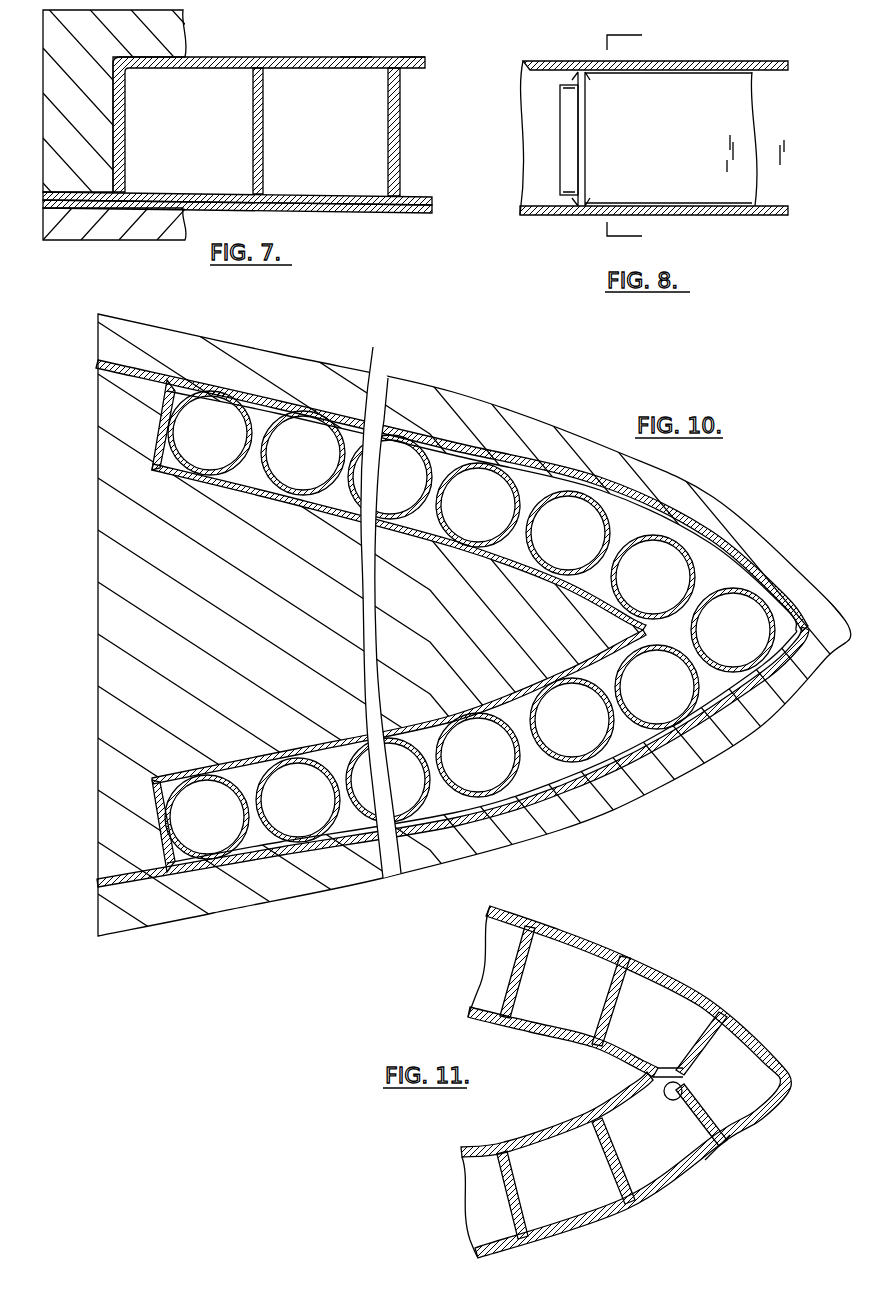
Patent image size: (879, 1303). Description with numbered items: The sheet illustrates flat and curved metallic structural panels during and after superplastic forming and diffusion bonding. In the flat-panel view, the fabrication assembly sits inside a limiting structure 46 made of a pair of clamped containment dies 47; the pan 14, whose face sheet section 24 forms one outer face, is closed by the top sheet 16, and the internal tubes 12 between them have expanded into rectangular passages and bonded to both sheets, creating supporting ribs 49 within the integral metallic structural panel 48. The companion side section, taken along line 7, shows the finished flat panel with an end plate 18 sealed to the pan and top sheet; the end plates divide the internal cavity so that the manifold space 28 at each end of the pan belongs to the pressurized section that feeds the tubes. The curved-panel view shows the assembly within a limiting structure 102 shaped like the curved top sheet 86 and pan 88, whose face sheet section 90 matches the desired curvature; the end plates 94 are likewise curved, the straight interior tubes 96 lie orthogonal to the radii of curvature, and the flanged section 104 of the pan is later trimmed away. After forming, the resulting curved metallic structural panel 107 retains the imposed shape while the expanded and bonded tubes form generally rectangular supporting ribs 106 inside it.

In FIG. 7, the internal tubes 12 is at (155, 192).
In FIG. 8, the internal tubes 12 is at (683, 72).
In FIG. 7, the pan 14 is at (283, 57).
In FIG. 7, the top sheet 16 is at (372, 214).
In FIG. 8, the top sheet 16 is at (770, 216).
In FIG. 8, the end plates 18 is at (568, 216).
In FIG. 7, the face sheet section 24 is at (425, 58).
In FIG. 8, the face sheet section 24 is at (733, 61).
In FIG. 8, the manifold space 28 is at (535, 130).
In FIG. 7, the limiting structure 46 is at (37, 192).
In FIG. 7, the containment dies 47 is at (183, 30).
In FIG. 7, the integral metallic structural panel 48 is at (347, 45).
In FIG. 7, the supporting ribs 49 is at (388, 120).
In FIG. 8, the section line 7— 7 is at (642, 31).
In FIG. 11, the top sheet 86 is at (717, 995).
In FIG. 10, the pan 88 is at (140, 470).
In FIG. 11, the pan 88 is at (600, 1057).
In FIG. 10, the face sheet section 90 is at (493, 557).
In FIG. 11, the face sheet section 90 is at (553, 1040).
In FIG. 10, the end plates 94 is at (532, 483).
In FIG. 10, the interior tubes 96 is at (573, 573).
In FIG. 11, the interior tubes 96 is at (683, 1088).
In FIG. 10, the limiting structure 102 is at (368, 374).
In FIG. 10, the flanged section 104 is at (138, 365).
In FIG. 11, the supporting ribs 106 is at (607, 1000).
In FIG. 11, the curved metallic structural panel 107 is at (722, 1180).